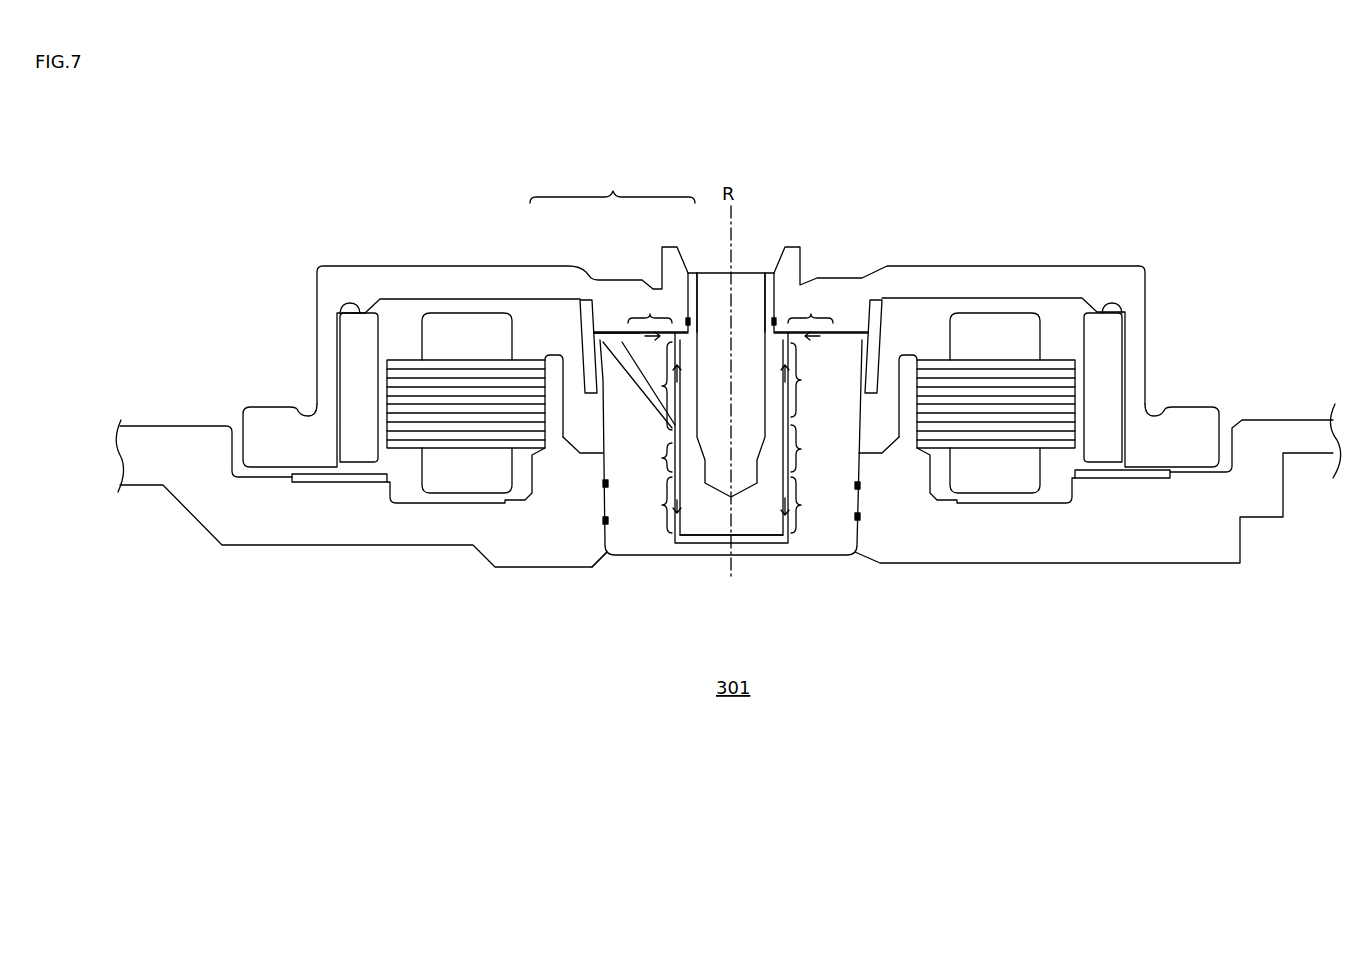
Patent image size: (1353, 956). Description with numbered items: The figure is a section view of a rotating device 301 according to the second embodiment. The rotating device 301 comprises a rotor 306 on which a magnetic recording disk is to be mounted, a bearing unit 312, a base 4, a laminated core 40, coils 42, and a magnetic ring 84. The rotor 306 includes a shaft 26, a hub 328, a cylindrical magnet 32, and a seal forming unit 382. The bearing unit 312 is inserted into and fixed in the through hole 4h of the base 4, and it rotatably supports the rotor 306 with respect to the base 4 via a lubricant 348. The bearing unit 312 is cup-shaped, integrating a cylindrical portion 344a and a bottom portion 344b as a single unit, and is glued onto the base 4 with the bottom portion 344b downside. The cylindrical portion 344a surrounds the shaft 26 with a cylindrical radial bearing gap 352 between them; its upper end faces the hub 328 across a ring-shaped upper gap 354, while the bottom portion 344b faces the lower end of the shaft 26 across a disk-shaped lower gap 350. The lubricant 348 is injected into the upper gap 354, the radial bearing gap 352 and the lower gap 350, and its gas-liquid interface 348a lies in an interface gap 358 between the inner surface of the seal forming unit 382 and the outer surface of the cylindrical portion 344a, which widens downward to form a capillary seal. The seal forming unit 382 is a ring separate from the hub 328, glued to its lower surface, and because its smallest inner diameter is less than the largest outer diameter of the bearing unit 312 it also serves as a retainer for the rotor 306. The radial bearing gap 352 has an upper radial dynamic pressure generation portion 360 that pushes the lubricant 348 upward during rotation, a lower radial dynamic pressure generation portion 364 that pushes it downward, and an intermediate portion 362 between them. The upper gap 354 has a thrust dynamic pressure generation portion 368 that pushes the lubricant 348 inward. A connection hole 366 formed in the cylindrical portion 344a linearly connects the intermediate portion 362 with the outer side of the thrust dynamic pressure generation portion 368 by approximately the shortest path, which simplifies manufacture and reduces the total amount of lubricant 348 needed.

The rotating device 301 is at (733, 687).
The rotor 306 is at (612, 185).
The cylindrical magnet 32 is at (372, 360).
The seal forming unit 382 is at (567, 300).
The hub 328 is at (612, 292).
The shaft 26 is at (705, 298).
The upper gap 354 is at (692, 340).
The radial bearing gap 352 is at (752, 330).
The thrust dynamic pressure generation portion 368 is at (730, 317).
The interface gap 358 is at (686, 345).
The upper radial dynamic pressure generation portion 360 is at (675, 385).
The intermediate portion 362 is at (733, 448).
The lower radial dynamic pressure generation portion 364 is at (733, 505).
The connection hole 366 is at (640, 387).
The lubricant 348 is at (768, 545).
The gas-liquid interface 348a is at (600, 396).
The cylindrical portion 344a is at (656, 546).
The bottom portion 344b is at (701, 545).
The lower gap 350 is at (737, 548).
The bearing unit 312 is at (840, 546).
The laminated core 40 is at (408, 443).
The coils 42 is at (467, 338).
The magnetic ring 84 is at (343, 482).
The base 4 is at (150, 486).
The through hole 4h is at (622, 556).